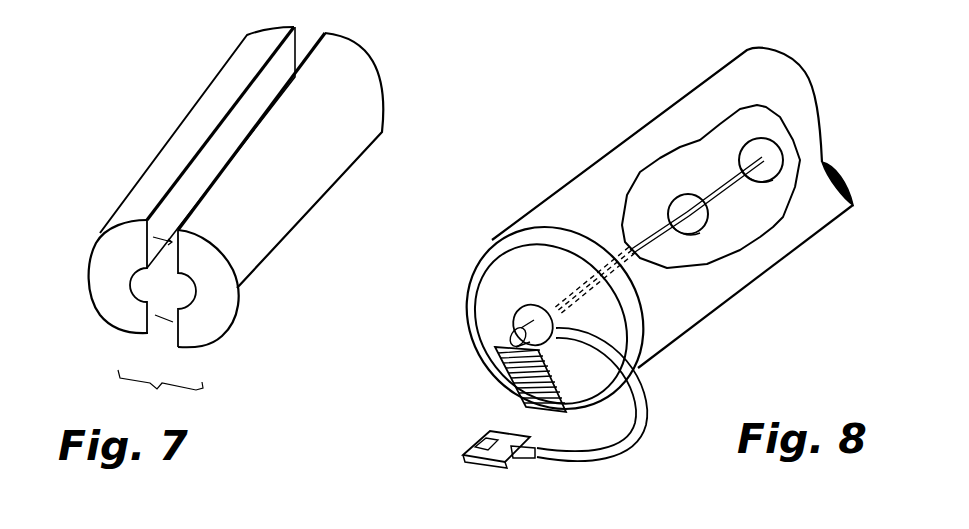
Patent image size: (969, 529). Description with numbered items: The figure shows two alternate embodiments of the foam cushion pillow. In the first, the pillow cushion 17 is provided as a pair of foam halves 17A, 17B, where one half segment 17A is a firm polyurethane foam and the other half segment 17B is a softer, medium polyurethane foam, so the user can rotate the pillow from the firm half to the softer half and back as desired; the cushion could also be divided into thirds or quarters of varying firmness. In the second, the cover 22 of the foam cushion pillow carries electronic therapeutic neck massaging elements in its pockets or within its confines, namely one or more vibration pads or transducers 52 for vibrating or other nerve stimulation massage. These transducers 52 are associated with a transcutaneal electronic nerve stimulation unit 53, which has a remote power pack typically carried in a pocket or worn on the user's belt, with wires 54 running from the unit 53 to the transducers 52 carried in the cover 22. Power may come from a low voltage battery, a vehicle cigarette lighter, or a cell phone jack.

In FIG. 7, the half segment 17A is at (162, 150).
In FIG. 7, the half segment 17B is at (318, 198).
In FIG. 8, the cover 22 is at (552, 205).
In FIG. 8, the pillow cushion 17 is at (730, 227).
In FIG. 8, the vibration pads/transducers 52 is at (759, 150).
In FIG. 8, the wires 54 is at (612, 252).
In FIG. 8, the T.E.N.S unit 53 is at (478, 436).